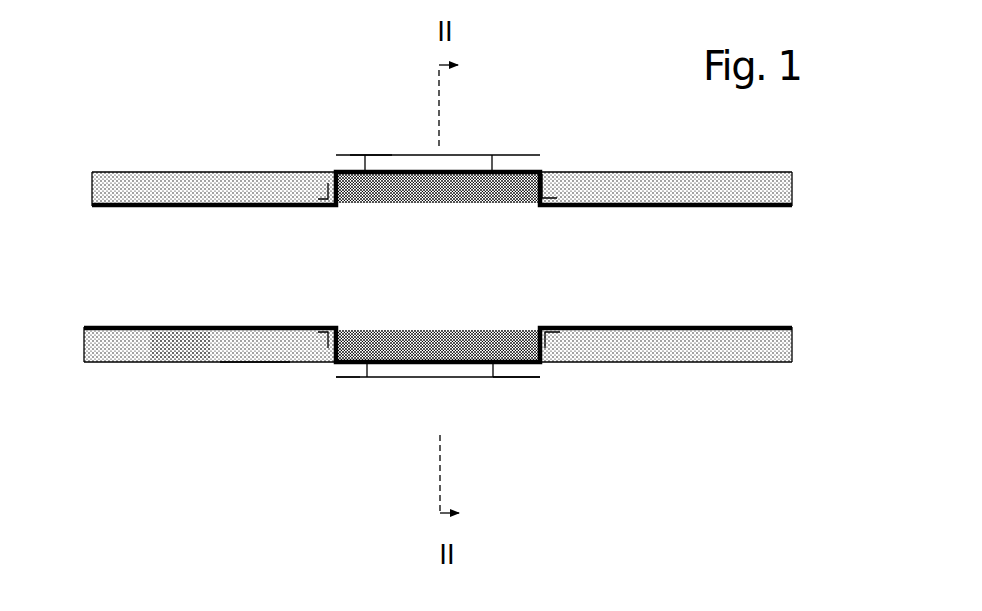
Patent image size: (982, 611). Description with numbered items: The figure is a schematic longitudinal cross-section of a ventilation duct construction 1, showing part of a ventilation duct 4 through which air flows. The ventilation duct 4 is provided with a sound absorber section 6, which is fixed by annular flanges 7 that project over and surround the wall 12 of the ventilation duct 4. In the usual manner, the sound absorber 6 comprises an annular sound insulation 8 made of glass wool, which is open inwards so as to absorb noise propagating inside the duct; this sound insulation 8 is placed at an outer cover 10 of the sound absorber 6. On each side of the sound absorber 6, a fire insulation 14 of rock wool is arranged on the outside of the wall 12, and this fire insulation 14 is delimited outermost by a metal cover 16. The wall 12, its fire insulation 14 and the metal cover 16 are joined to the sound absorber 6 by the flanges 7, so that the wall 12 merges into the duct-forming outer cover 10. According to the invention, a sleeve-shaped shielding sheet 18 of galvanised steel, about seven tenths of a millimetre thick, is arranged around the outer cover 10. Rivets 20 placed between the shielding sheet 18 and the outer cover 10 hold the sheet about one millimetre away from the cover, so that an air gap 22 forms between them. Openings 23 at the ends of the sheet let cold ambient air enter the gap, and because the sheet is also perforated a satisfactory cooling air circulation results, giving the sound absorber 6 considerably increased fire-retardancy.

The ventilation duct construction 1 is at (220, 103).
The ventilation duct 4 is at (174, 269).
The sound absorber section 6 is at (473, 150).
The annular flanges 7 is at (330, 193).
The annular sound insulation 8 is at (512, 192).
The outer cover 10 is at (532, 363).
The wall 12 is at (712, 326).
The fire insulation 14 is at (186, 350).
The metal cover 16 is at (256, 362).
The shielding sheet 18 is at (392, 156).
The rivets 20 is at (367, 362).
The air gap 22 is at (516, 368).
The openings 23 is at (330, 372).